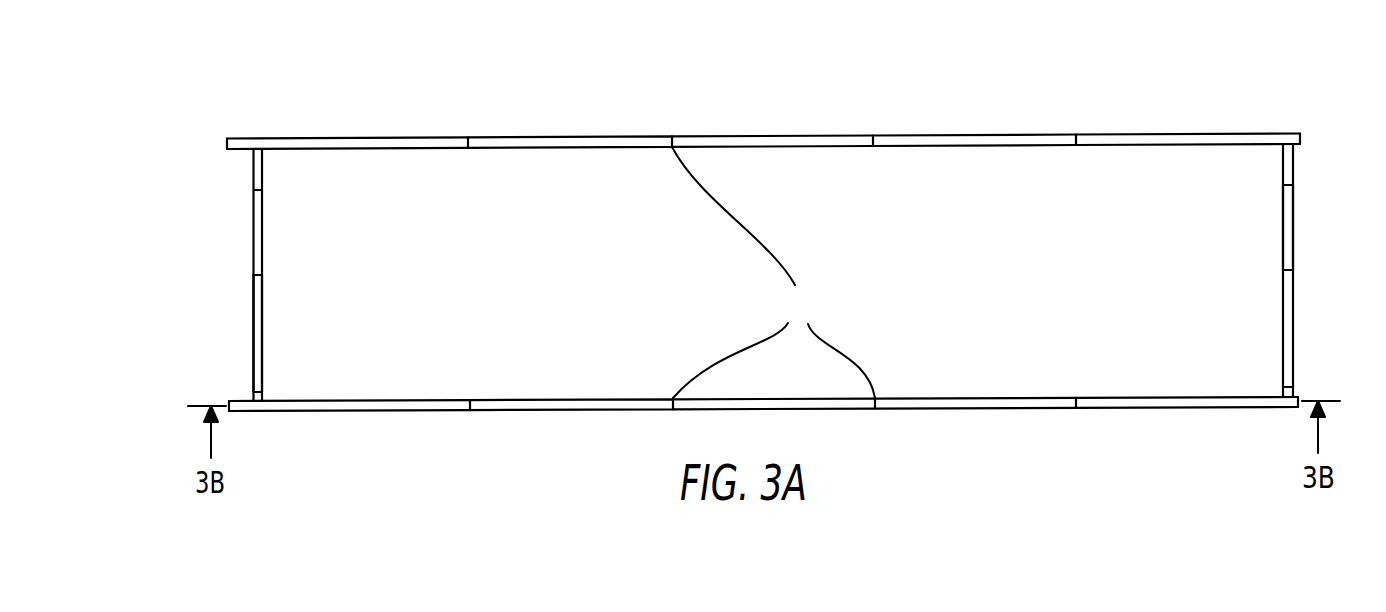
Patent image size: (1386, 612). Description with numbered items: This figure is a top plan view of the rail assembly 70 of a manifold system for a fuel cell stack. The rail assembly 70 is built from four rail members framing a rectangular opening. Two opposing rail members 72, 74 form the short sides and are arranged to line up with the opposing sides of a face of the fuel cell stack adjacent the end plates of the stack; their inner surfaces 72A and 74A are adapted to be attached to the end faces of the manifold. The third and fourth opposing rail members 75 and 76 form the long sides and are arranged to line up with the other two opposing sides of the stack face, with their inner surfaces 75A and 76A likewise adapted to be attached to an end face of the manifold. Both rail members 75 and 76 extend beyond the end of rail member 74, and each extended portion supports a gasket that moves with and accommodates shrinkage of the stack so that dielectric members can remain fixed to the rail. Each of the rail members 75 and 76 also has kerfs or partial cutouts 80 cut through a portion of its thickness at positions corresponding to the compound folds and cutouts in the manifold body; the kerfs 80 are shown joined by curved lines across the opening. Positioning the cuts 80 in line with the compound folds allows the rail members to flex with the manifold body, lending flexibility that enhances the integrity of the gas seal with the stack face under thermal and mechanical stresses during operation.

The rail assembly 70 is at (256, 175).
The rail member 72 is at (1283, 305).
The inner surface 72A is at (1283, 280).
The rail member 74 is at (260, 253).
The inner surface 74A is at (262, 316).
The rail member 75 is at (578, 398).
The inner surface 75A is at (460, 398).
The rail member 76 is at (537, 137).
The inner surface 76A is at (548, 150).
The kerf 80 is at (773, 272).